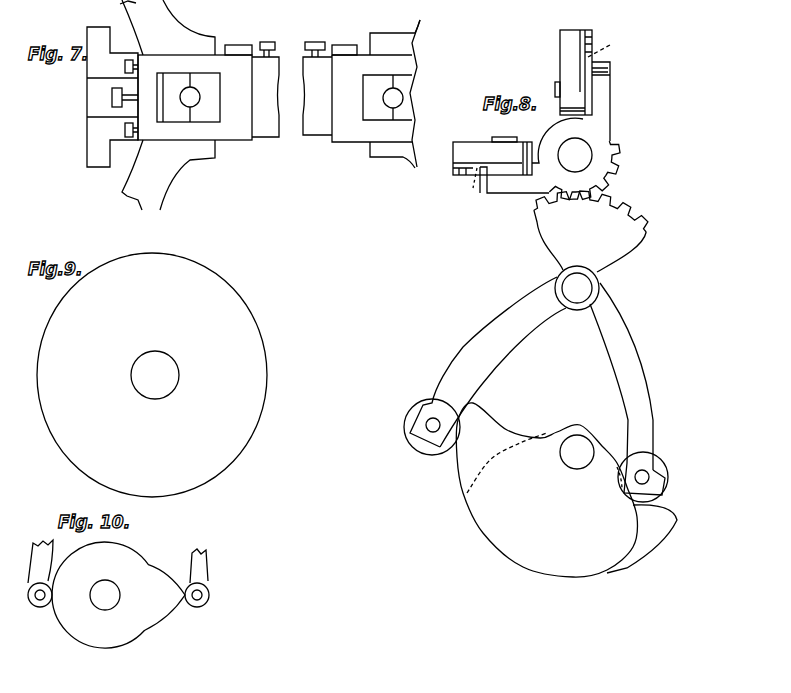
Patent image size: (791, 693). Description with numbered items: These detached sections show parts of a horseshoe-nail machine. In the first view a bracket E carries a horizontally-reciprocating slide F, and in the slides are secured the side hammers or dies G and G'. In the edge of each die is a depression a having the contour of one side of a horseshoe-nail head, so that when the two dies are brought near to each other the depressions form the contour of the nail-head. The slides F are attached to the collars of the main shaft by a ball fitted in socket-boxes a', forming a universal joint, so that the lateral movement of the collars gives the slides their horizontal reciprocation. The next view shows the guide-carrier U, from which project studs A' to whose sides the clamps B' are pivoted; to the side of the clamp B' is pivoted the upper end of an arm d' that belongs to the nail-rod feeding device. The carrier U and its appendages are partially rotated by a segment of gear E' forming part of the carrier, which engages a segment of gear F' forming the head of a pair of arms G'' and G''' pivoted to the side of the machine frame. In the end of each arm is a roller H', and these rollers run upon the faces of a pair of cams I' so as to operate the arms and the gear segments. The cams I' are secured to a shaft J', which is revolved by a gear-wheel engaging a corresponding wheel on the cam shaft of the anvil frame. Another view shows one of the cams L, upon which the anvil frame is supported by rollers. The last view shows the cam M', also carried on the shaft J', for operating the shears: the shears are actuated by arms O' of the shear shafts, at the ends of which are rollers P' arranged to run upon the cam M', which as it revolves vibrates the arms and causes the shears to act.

In FIG. 7, the brackets E is at (270, 105).
In FIG. 7, the horizontally-reciprocating slide F is at (275, 93).
In FIG. 7, the socket-boxes a' is at (284, 97).
In FIG. 7, the side hammer or die G is at (265, 89).
In FIG. 7, the side hammer or die G' is at (317, 88).
In FIG. 7, the depression a is at (291, 125).
In FIG. 8, the clamp B' is at (522, 102).
In FIG. 8, the studs A' is at (545, 127).
In FIG. 8, the arm d' is at (539, 113).
In FIG. 8, the carrier U is at (557, 140).
In FIG. 8, the segment of gear E' is at (591, 169).
In FIG. 8, the segment of gear F' is at (591, 250).
In FIG. 8, the arm G'' is at (488, 362).
In FIG. 8, the arm G''' is at (627, 389).
In FIG. 8, the roller H' is at (543, 445).
In FIG. 8, the cam I' is at (566, 490).
In FIG. 8, the shaft J' is at (577, 452).
In FIG. 9, the cam L is at (152, 375).
In FIG. 10, the cam M' is at (118, 595).
In FIG. 10, the arm O' is at (118, 561).
In FIG. 10, the roller P' is at (116, 595).